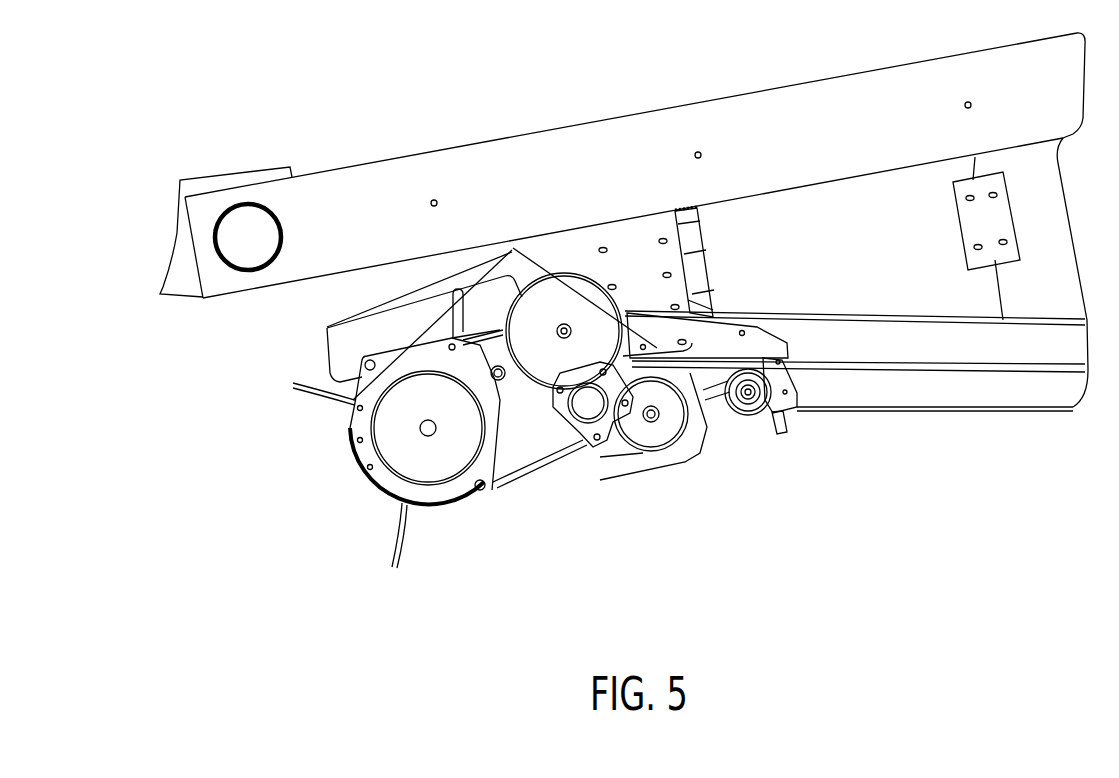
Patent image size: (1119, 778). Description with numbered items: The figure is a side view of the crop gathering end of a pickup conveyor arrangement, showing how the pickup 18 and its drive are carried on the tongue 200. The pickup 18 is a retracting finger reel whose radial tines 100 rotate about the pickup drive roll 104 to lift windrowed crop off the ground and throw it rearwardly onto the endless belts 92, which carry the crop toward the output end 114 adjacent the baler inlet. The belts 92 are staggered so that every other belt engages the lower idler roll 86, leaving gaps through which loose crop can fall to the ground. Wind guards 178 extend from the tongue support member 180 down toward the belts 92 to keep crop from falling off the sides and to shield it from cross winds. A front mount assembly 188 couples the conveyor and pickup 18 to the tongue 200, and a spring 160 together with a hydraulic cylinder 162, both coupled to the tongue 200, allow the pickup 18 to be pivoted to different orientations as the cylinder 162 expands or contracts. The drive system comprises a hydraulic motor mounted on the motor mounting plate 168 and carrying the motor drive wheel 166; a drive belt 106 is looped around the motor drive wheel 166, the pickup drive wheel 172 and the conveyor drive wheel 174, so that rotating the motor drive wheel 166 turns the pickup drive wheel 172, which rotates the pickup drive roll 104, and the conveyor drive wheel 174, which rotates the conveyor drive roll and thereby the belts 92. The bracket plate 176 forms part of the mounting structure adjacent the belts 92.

The tongue 200 is at (475, 152).
The tongue support member 180 is at (815, 97).
The output end 114 is at (714, 196).
The wind guard 178 is at (877, 183).
The hydraulic cylinder 162 is at (688, 242).
The spring 160 is at (687, 205).
The front mount assembly 188 is at (620, 233).
The endless belt 92 is at (800, 313).
The bracket plate 176 is at (737, 320).
The drive belt 106 is at (432, 350).
The pickup drive roll 104 is at (510, 247).
The conveyor drive wheel 174 is at (563, 326).
The pickup drive wheel 172 is at (425, 467).
The motor mounting plate 168 is at (692, 443).
The motor drive wheel 166 is at (662, 427).
The lower idler roll 86 is at (747, 400).
The radial tine 100 is at (305, 395).
The pickup 18 is at (395, 583).